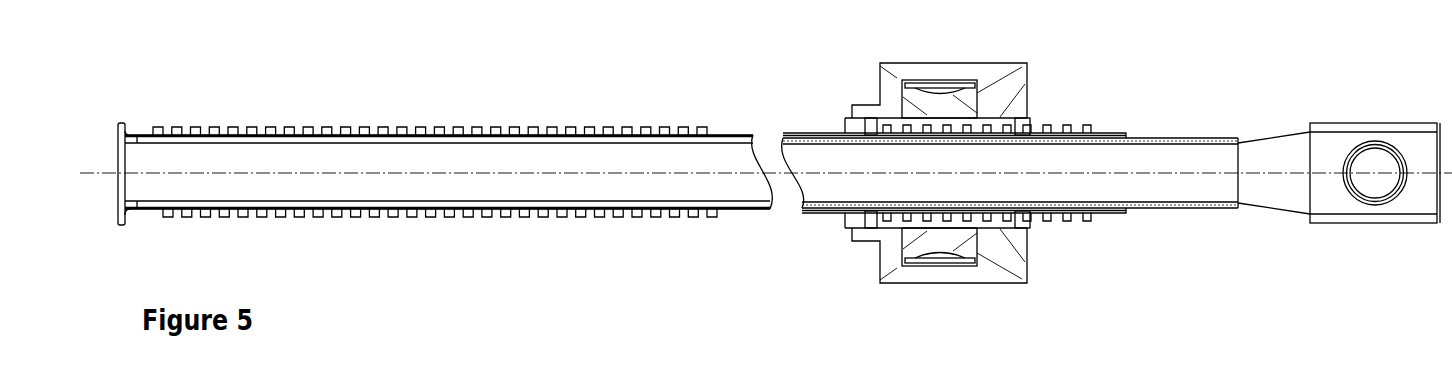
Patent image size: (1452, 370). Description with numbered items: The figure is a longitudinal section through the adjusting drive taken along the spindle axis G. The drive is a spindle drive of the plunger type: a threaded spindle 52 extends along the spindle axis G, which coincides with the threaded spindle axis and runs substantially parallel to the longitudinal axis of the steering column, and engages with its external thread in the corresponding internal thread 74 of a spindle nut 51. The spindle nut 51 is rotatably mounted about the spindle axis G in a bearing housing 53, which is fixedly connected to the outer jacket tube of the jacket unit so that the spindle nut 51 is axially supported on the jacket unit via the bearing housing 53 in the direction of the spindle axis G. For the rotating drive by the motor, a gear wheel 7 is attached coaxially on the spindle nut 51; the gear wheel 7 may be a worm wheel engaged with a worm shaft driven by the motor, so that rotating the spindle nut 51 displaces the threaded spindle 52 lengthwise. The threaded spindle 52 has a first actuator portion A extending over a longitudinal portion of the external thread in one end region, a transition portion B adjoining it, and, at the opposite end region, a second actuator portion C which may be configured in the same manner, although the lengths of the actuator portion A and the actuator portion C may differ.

The threaded spindle 52 is at (630, 64).
The bearing housing 53 is at (893, 70).
The gear wheel 7 is at (932, 103).
The internal thread 74 is at (942, 125).
The spindle nut 51 is at (983, 213).
The first actuator portion A is at (153, 125).
The transition portion B is at (1030, 120).
The second actuator portion C is at (1091, 125).
The spindle axis G is at (1193, 172).